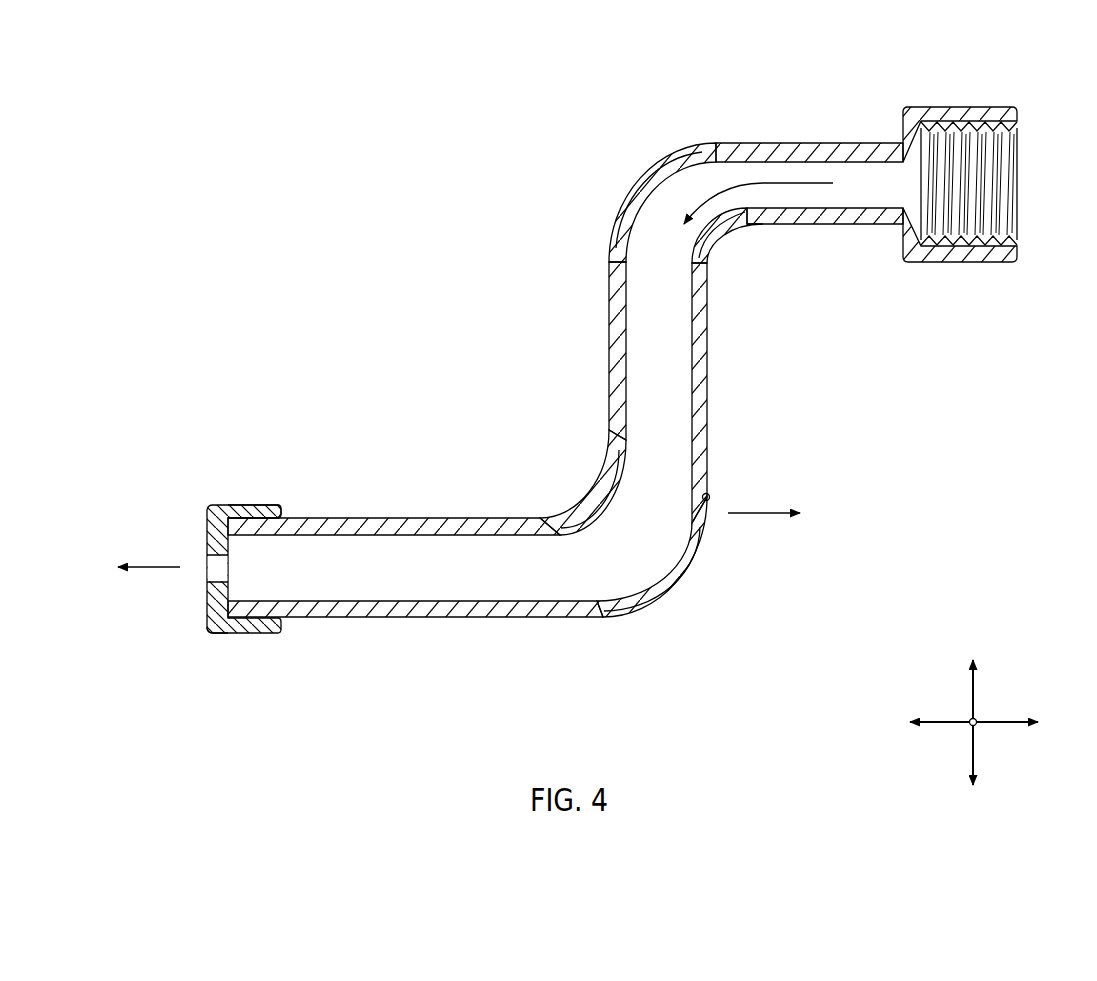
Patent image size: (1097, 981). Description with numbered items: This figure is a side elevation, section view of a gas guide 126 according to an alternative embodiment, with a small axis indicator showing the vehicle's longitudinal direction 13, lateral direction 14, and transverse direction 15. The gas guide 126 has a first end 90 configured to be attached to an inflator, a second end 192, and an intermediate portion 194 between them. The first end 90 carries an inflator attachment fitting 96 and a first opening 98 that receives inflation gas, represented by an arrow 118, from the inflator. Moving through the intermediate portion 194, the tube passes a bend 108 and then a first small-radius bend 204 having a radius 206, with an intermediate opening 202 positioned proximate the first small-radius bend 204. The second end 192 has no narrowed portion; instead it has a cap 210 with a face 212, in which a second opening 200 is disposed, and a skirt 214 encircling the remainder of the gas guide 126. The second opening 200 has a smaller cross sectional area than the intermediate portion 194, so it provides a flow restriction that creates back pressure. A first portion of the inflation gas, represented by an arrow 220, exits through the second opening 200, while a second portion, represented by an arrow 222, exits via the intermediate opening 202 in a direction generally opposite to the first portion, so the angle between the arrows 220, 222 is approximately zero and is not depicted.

The longitudinal direction 13 is at (1005, 722).
The lateral direction 14 is at (973, 722).
The transverse direction 15 is at (975, 697).
The first end 90 is at (842, 124).
The inflator attachment fitting 96 is at (965, 107).
The first opening 98 is at (915, 160).
The first bend of conduit 108 is at (629, 168).
The arrow 118 is at (767, 184).
The gas guide 126 is at (466, 145).
The second end 192 is at (294, 501).
The intermediate portion 194 is at (596, 413).
The second opening 200 is at (210, 563).
The intermediate opening 202 is at (712, 497).
The first small-radius bend 204 is at (703, 604).
The radius 206 is at (573, 463).
The cap 210 is at (205, 492).
The face 212 is at (205, 618).
The skirt 214 is at (243, 503).
The arrow 220 is at (141, 567).
The arrow 222 is at (778, 513).